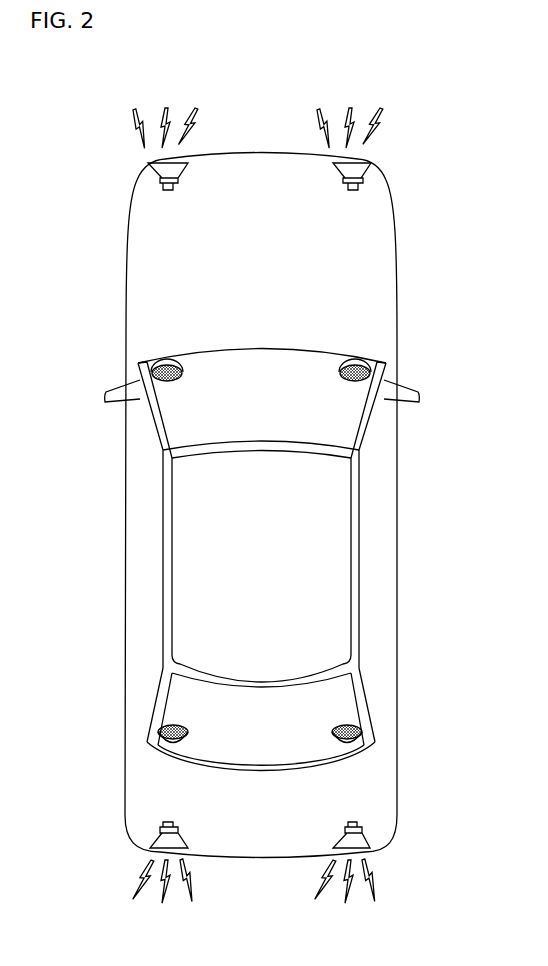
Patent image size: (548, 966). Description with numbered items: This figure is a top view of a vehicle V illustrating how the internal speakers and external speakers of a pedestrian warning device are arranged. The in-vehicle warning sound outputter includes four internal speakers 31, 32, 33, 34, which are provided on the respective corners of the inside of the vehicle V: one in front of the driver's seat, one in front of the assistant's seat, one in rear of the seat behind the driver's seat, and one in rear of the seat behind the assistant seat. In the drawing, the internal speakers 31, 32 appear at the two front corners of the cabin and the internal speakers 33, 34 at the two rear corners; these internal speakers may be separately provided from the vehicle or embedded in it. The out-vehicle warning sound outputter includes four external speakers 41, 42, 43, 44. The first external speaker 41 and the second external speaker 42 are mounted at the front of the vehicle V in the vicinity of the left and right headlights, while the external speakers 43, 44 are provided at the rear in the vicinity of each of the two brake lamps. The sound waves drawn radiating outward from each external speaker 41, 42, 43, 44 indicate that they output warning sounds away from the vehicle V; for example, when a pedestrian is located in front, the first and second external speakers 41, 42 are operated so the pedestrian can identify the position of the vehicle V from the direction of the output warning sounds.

The vehicle V is at (126, 512).
The internal speaker 31 is at (152, 363).
The internal speaker 32 is at (360, 363).
The internal speaker 33 is at (360, 740).
The internal speaker 34 is at (160, 740).
The first external speaker 41 is at (155, 170).
The second external speaker 42 is at (358, 167).
The external speaker 43 is at (370, 838).
The external speaker 44 is at (155, 838).